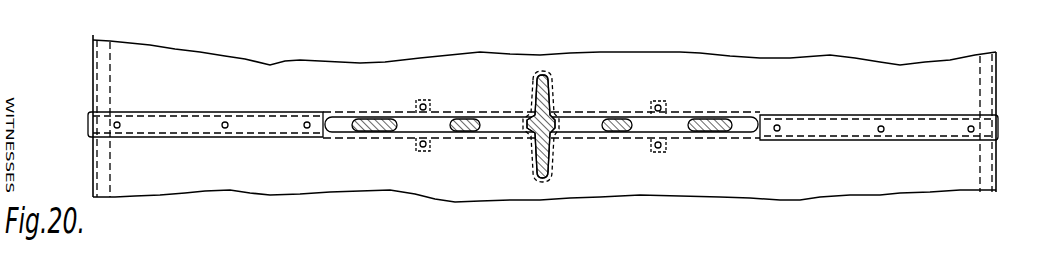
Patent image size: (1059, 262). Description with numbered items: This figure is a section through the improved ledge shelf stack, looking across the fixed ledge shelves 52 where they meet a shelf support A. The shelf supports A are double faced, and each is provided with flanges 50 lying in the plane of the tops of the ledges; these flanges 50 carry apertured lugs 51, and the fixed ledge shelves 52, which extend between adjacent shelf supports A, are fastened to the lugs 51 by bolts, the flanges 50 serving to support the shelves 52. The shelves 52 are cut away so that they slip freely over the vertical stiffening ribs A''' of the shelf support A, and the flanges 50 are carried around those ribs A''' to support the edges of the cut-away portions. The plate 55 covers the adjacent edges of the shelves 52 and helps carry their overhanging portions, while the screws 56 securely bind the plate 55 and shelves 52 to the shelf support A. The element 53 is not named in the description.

The flanges 50 is at (627, 140).
The apertured lugs 51 is at (430, 146).
The fixed ledge shelves 52 is at (544, 121).
The rivet 53 is at (662, 148).
The plate 55 is at (922, 118).
The screws 56 is at (970, 132).
The shelf supports A is at (710, 145).
The vertical stiffening ribs A''' is at (556, 126).